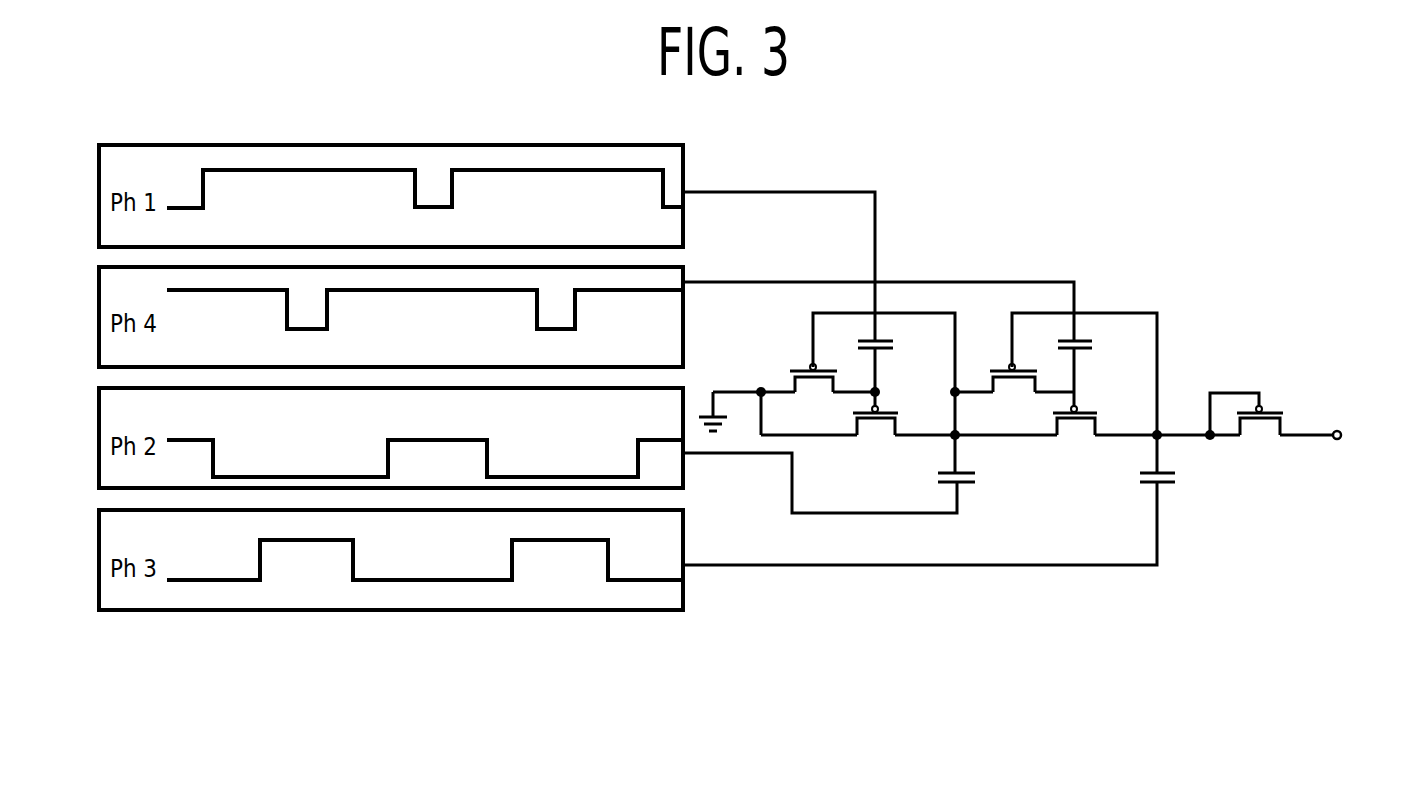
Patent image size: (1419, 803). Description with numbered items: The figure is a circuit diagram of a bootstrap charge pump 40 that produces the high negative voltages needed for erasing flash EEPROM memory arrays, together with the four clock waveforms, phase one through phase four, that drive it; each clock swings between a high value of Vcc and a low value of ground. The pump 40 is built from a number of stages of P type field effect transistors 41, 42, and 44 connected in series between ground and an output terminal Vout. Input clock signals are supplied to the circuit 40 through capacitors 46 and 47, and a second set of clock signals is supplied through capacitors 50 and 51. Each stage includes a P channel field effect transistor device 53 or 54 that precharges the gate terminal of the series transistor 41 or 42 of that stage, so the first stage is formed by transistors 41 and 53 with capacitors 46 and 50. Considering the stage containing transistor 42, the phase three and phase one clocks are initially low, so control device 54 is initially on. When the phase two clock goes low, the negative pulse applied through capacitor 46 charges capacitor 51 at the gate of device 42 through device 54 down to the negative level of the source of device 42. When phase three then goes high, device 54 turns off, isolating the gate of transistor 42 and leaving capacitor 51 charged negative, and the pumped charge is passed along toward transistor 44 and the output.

The pump 40 is at (1126, 270).
The P type field effect transistor 41 is at (880, 408).
The P type field effect transistor 42 is at (1080, 408).
The P type field effect transistor 44 is at (1263, 408).
The capacitor 46 is at (976, 481).
The capacitor 47 is at (1176, 481).
The capacitor 50 is at (893, 346).
The capacitor 51 is at (1092, 346).
The P channel field effect transistor device 53 is at (806, 364).
The P channel field effect transistor device 54 is at (1005, 364).